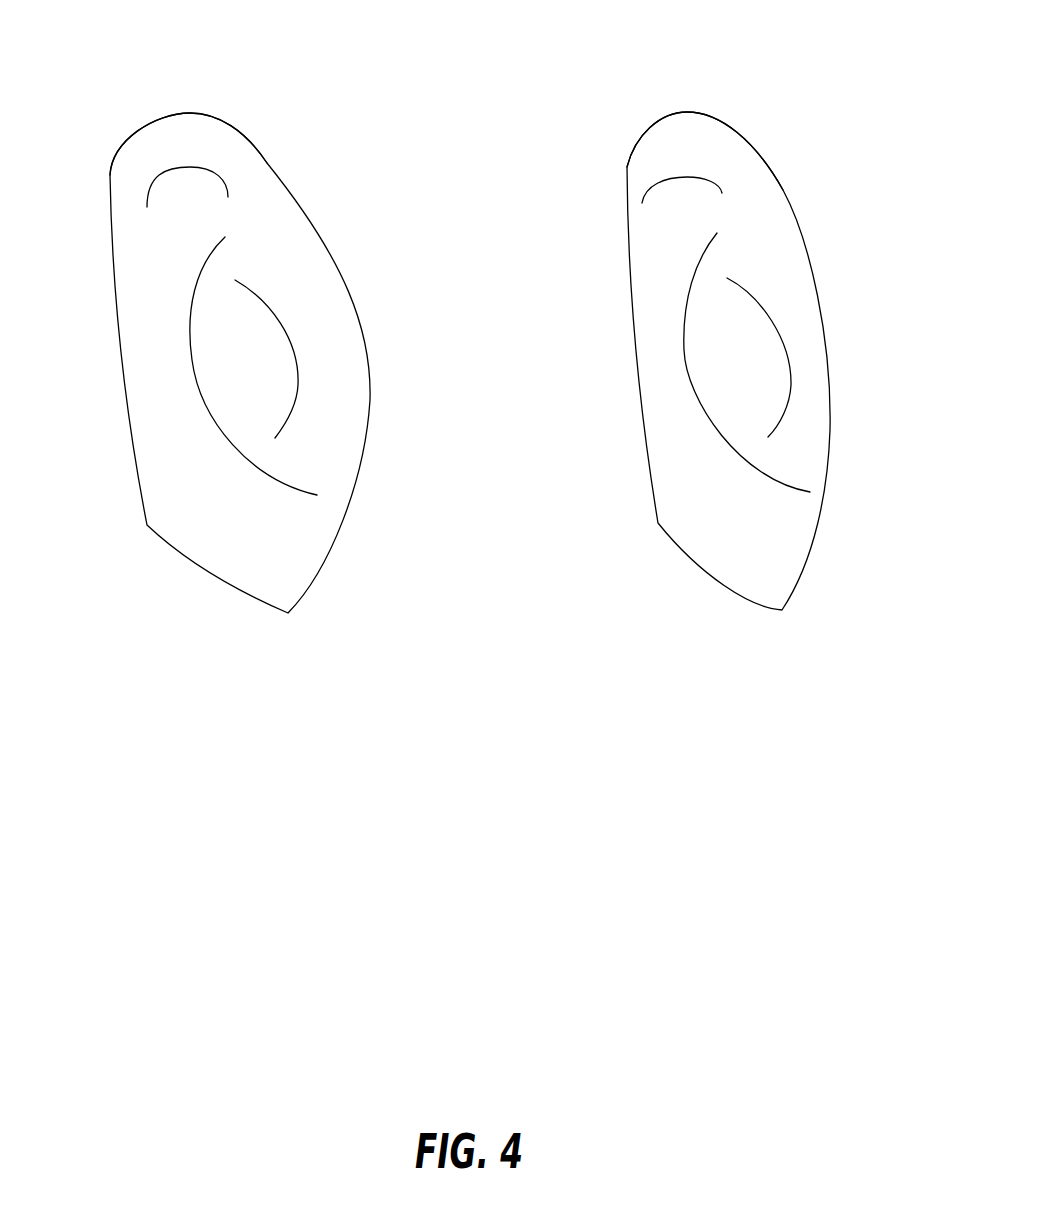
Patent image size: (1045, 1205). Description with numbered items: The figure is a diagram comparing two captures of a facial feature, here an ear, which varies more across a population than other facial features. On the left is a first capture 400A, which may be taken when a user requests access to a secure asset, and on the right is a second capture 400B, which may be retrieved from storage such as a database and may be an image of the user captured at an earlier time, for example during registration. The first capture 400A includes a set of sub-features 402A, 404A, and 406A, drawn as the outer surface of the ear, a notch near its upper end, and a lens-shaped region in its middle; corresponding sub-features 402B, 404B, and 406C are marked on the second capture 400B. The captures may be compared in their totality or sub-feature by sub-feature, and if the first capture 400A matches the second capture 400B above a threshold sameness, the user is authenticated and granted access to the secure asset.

The first capture 400A is at (233, 597).
The sub-feature 402A is at (193, 112).
The sub-feature 404A is at (155, 178).
The sub-feature 406A is at (352, 292).
The second capture 400B is at (707, 577).
The sub-feature 402B is at (700, 112).
The sub-feature 404B is at (653, 188).
The sub-feature 406C is at (823, 317).